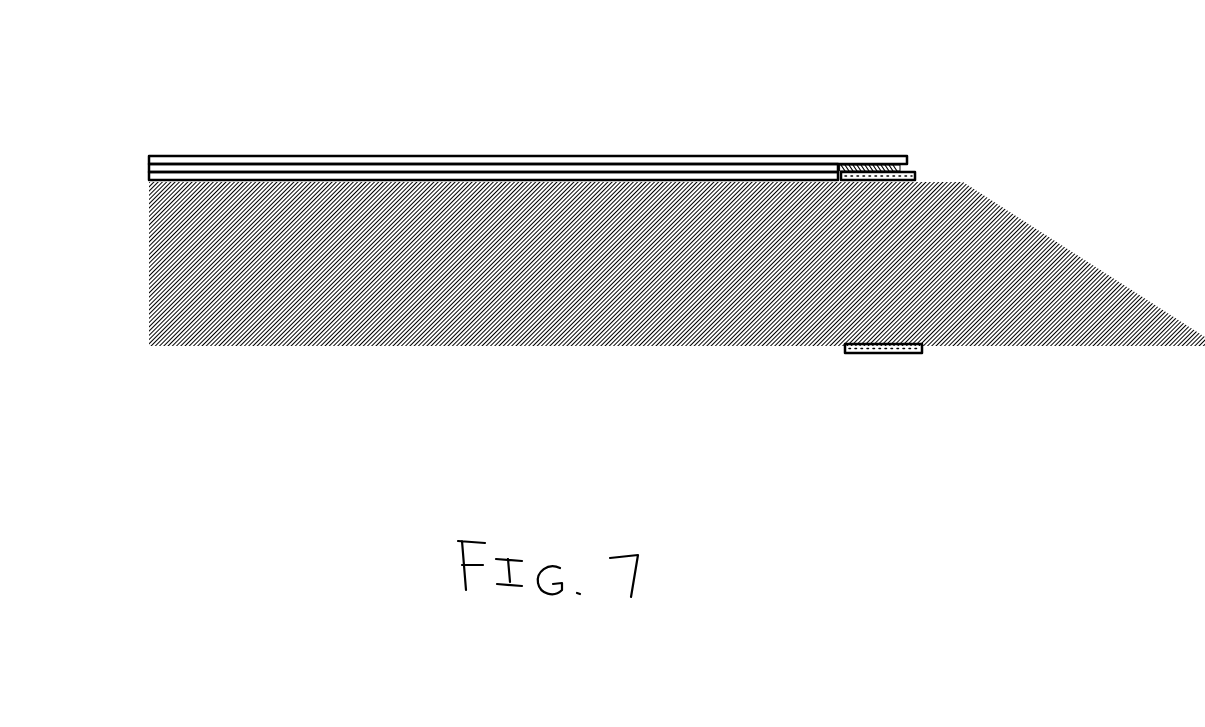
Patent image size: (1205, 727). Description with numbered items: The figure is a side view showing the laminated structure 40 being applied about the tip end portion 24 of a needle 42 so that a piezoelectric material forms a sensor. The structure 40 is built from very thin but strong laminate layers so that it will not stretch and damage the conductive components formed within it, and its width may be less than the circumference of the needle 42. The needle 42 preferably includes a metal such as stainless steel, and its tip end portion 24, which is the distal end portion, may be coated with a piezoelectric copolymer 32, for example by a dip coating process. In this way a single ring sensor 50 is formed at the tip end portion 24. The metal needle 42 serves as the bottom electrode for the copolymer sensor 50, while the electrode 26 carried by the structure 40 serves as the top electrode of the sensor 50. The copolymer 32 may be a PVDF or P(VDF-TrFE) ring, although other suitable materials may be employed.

The tip end portion 24 is at (677, 240).
The structure 40 is at (382, 156).
The ring sensor 50 is at (877, 133).
The electrode 26 is at (916, 166).
The piezoelectric copolymer 32 is at (917, 174).
The needle 42 is at (585, 310).